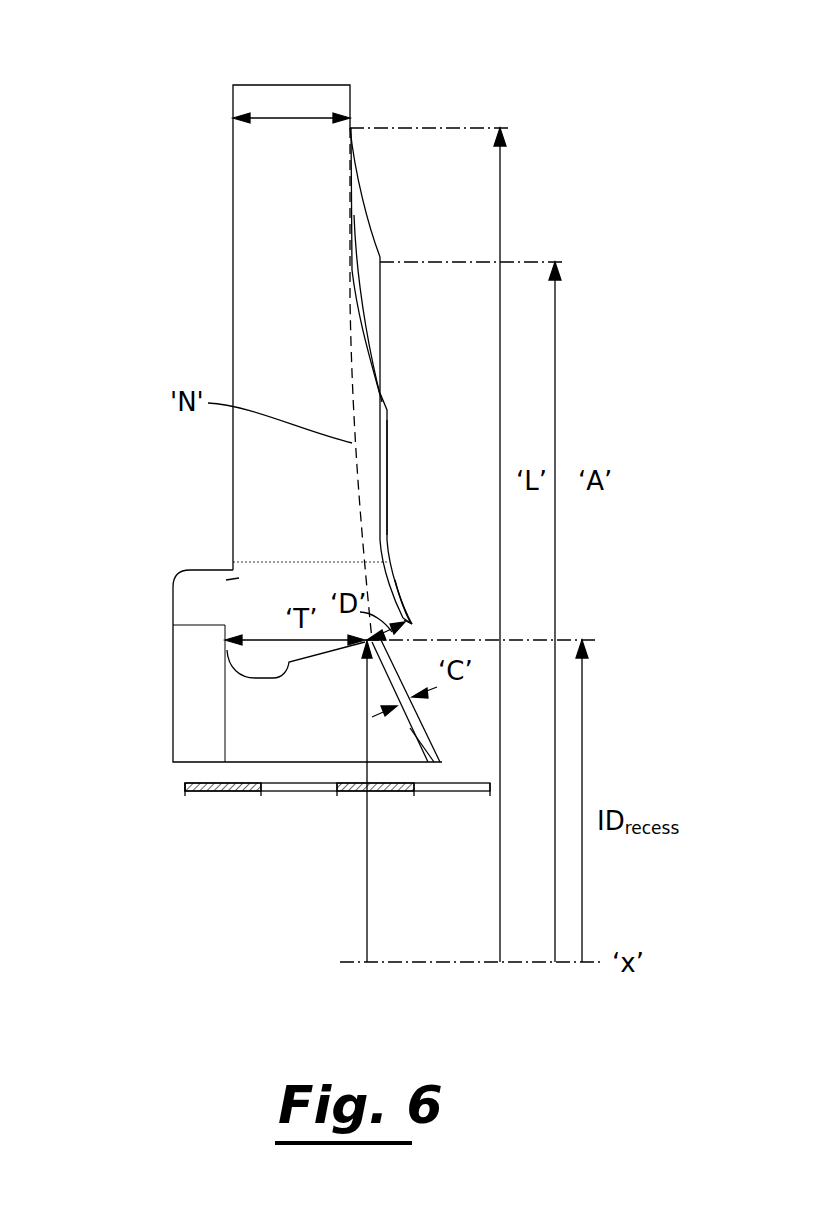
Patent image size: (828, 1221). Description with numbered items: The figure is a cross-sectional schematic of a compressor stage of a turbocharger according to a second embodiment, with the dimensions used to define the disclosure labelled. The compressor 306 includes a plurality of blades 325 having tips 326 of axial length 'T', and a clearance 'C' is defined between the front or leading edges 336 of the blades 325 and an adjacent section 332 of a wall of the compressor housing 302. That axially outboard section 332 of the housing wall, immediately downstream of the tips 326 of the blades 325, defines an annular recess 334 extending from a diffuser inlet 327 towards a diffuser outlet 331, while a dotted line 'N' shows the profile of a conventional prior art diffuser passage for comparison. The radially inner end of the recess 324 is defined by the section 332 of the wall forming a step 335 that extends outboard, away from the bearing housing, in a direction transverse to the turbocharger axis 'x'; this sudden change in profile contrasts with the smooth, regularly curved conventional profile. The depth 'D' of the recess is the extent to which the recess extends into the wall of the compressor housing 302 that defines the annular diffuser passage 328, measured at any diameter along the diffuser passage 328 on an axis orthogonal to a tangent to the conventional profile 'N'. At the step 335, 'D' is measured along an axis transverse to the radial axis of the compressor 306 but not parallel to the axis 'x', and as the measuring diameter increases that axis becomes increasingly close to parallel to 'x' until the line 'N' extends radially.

The compressor housing 302 is at (415, 384).
The compressor 306 is at (280, 868).
The recess 324 is at (420, 588).
The blades 325 is at (240, 708).
The tips 326 is at (258, 680).
The diffuser inlet 327 is at (290, 553).
The annular diffuser passage 328 is at (272, 282).
The diffuser outlet 331 is at (300, 85).
The axially outboard section of the compressor housing wall 332 is at (412, 716).
The annular recess 334 is at (373, 512).
The step 335 is at (408, 630).
The leading edges 336 is at (404, 706).